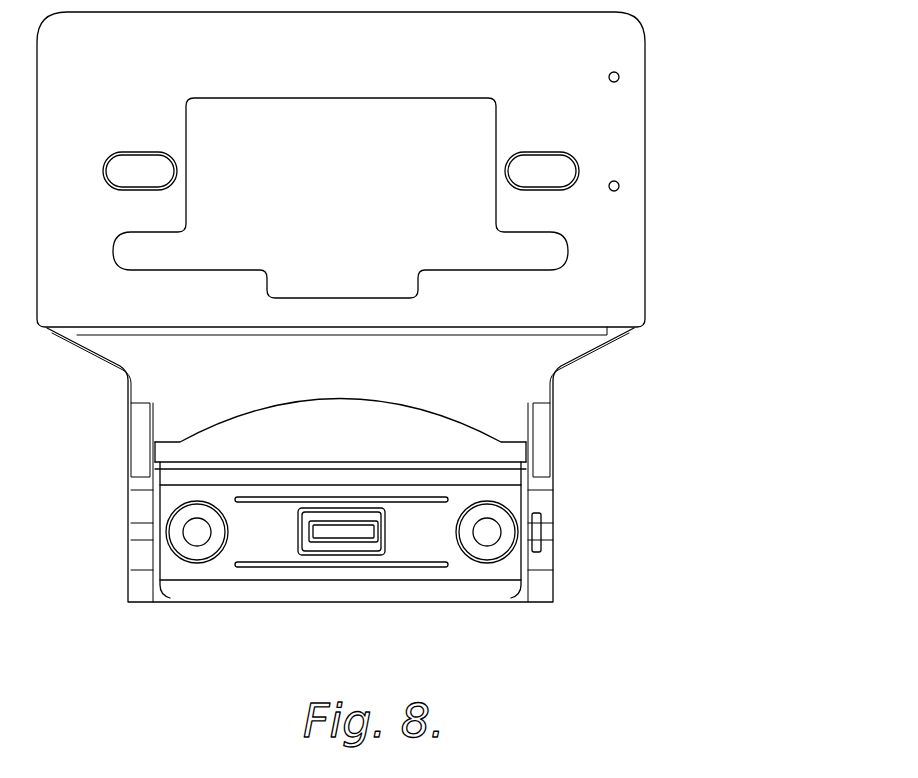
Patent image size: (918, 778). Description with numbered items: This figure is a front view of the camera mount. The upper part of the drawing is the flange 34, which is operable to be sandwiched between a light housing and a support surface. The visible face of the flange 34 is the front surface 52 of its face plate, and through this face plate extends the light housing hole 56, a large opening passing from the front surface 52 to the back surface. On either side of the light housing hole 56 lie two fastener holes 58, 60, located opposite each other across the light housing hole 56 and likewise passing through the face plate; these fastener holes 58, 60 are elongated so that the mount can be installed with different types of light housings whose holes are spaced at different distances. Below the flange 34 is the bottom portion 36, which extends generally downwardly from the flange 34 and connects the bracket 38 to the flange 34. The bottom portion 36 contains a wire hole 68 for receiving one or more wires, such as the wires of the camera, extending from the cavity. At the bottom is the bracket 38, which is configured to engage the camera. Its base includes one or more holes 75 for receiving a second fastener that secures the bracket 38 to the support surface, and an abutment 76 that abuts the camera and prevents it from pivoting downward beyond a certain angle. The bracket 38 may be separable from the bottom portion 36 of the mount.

The flange 34 is at (645, 35).
The front surface 52 is at (329, 61).
The light housing hole 56 is at (420, 138).
The fastener hole 58 is at (128, 172).
The fastener hole 60 is at (557, 172).
The bottom portion 36 is at (567, 363).
The wire hole 68 is at (363, 432).
The holes 75 is at (190, 530).
The abutment 76 is at (340, 545).
The bracket 38 is at (558, 533).